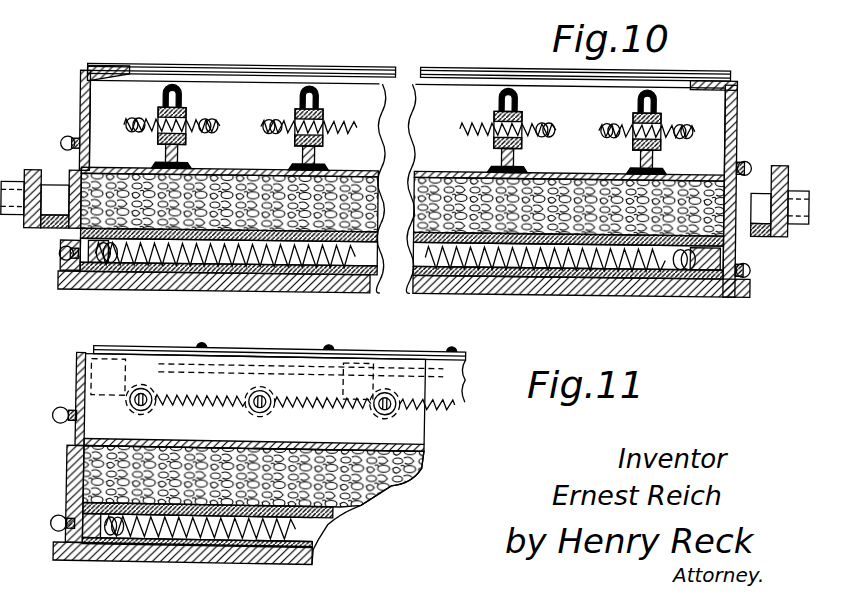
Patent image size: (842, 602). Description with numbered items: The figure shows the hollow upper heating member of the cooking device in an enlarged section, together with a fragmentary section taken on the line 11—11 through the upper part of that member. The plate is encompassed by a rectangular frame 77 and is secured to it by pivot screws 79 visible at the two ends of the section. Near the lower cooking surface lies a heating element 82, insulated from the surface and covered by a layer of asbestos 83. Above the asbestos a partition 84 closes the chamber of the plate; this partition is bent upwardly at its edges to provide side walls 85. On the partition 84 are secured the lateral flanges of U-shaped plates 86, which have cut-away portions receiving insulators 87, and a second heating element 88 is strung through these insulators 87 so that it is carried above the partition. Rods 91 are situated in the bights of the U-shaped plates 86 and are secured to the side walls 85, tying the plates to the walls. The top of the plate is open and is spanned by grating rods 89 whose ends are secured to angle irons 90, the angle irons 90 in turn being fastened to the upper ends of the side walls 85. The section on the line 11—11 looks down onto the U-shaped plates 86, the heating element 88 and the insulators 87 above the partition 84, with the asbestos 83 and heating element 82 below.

In FIG. 10, the section line 11— 11 is at (204, 38).
In FIG. 10, the rectangular frame 77 is at (770, 238).
In FIG. 10, the pivot screws 79 is at (787, 164).
In FIG. 10, the heating element 82 is at (700, 272).
In FIG. 11, the heating element 82 is at (325, 530).
In FIG. 10, the layer of asbestos 83 is at (668, 200).
In FIG. 11, the layer of asbestos 83 is at (395, 468).
In FIG. 10, the partition 84 is at (242, 167).
In FIG. 11, the partition 84 is at (422, 447).
In FIG. 10, the side walls 85 is at (78, 96).
In FIG. 11, the side walls 85 is at (73, 377).
In FIG. 10, the U-shaped plates 86 is at (178, 152).
In FIG. 11, the U-shaped plates 86 is at (222, 378).
In FIG. 10, the insulators 87 is at (521, 118).
In FIG. 10, the heating element 88 is at (356, 124).
In FIG. 10, the grating rods 89 is at (437, 66).
In FIG. 10, the angle irons 90 is at (701, 78).
In FIG. 10, the rods 91 is at (515, 86).